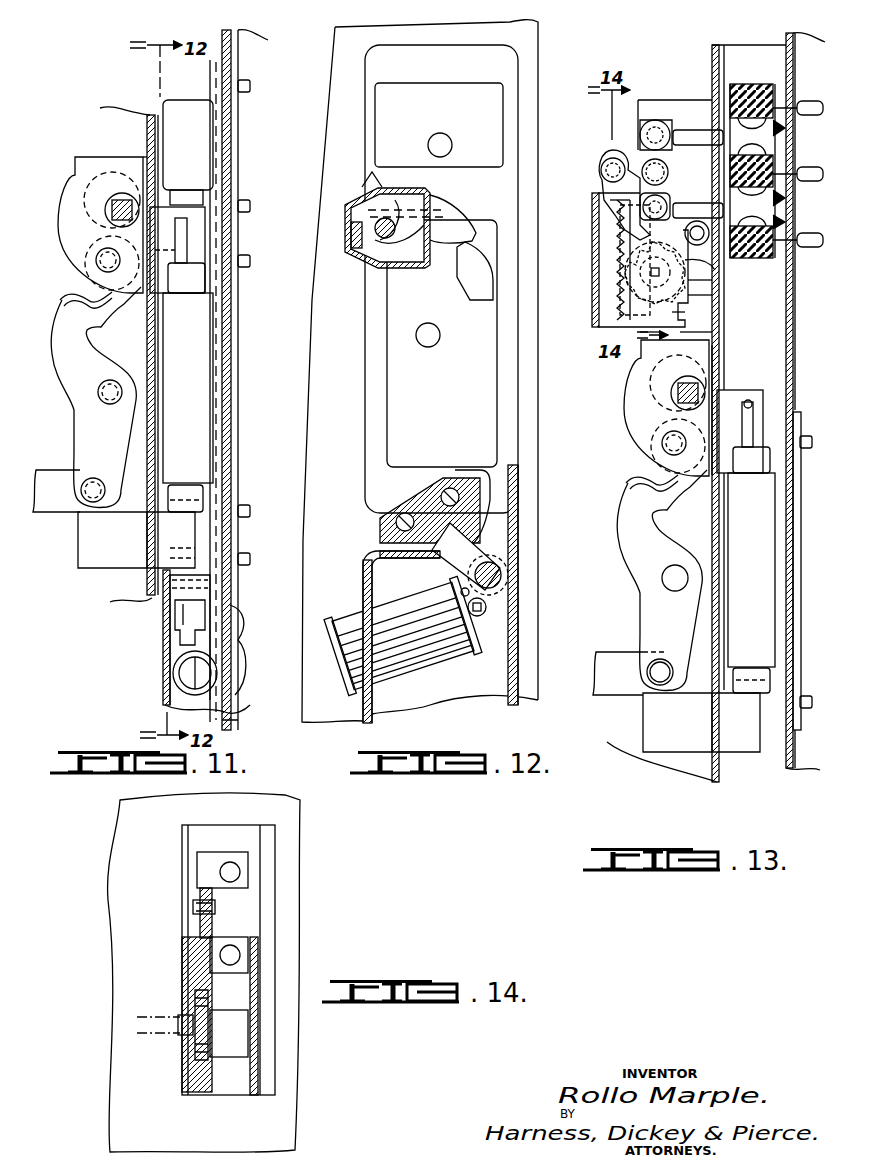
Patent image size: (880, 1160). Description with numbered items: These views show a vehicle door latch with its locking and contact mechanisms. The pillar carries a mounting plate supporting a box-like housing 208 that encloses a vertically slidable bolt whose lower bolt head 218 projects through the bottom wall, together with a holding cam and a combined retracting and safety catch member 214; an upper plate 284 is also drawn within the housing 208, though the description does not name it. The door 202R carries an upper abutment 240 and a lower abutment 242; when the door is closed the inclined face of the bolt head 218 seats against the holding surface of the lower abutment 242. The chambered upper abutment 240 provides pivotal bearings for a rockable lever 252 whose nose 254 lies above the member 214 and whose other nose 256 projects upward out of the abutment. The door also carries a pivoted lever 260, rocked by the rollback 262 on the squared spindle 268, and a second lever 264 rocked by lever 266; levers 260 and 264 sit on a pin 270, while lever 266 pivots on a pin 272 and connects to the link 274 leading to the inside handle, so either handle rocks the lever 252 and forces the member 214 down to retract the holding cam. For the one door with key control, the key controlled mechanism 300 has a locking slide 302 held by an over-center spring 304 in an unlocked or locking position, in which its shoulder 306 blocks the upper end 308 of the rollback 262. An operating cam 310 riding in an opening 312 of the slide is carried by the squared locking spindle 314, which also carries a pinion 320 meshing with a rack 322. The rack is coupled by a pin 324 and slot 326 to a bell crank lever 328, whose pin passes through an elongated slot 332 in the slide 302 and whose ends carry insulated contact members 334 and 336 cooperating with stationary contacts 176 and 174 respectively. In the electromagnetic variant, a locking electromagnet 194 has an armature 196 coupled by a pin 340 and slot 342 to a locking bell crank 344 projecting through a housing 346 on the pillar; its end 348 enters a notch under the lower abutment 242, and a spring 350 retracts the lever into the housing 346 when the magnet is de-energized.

In FIG. 13, the stationary contacts 174 is at (785, 225).
In FIG. 13, the stationary contacts 176 is at (780, 138).
In FIG. 11, the locking electromagnet 194 is at (190, 672).
In FIG. 12, the locking electromagnet 194 is at (425, 648).
In FIG. 12, the armature 196 is at (482, 602).
In FIG. 13, the door 202R is at (716, 46).
In FIG. 14, the door 202R is at (285, 858).
In FIG. 11, the housing 208 is at (188, 378).
In FIG. 12, the housing 208 is at (460, 383).
In FIG. 13, the housing 208 is at (778, 563).
In FIG. 12, the combined retracting and safety catch member 214 is at (475, 268).
In FIG. 11, the bolt head 218 is at (198, 497).
In FIG. 12, the bolt head 218 is at (462, 472).
In FIG. 13, the bolt head 218 is at (748, 678).
In FIG. 12, the upper abutment 240 is at (375, 260).
In FIG. 11, the lower abutment 242 is at (160, 528).
In FIG. 12, the lower abutment 242 is at (490, 500).
In FIG. 13, the lower abutment 242 is at (735, 735).
In FIG. 12, the rockable lever 252 is at (447, 206).
In FIG. 11, the nose 254 is at (181, 240).
In FIG. 13, the nose 254 is at (750, 404).
In FIG. 11, the nose 256 is at (205, 198).
In FIG. 12, the nose 256 is at (378, 192).
In FIG. 11, the pivoted lever 260 is at (66, 203).
In FIG. 13, the pivoted lever 260 is at (633, 416).
In FIG. 11, the rollback 262 is at (147, 152).
In FIG. 13, the rollback 262 is at (718, 358).
In FIG. 11, the second lever 264 is at (88, 306).
In FIG. 13, the second lever 264 is at (648, 488).
In FIG. 11, the lever 266 is at (88, 448).
In FIG. 13, the lever 266 is at (656, 618).
In FIG. 11, the squared spindle 268 is at (115, 203).
In FIG. 11, the pin 270 is at (100, 260).
In FIG. 11, the pin 272 is at (100, 396).
In FIG. 11, the link 274 is at (34, 512).
In FIG. 13, the link 274 is at (615, 690).
In FIG. 11, the slide plate 284 is at (197, 150).
In FIG. 12, the slide plate 284 is at (470, 120).
In FIG. 13, the key controlled mechanism 300 is at (596, 206).
In FIG. 14, the key controlled mechanism 300 is at (180, 940).
In FIG. 13, the locking slide 302 is at (692, 297).
In FIG. 13, the over-center spring 304 is at (705, 265).
In FIG. 13, the shoulder 306 is at (690, 315).
In FIG. 13, the upper end 308 is at (720, 340).
In FIG. 13, the operating cam 310 is at (636, 290).
In FIG. 13, the opening 312 is at (640, 335).
In FIG. 14, the opening 312 is at (212, 996).
In FIG. 13, the squared locking spindle 314 is at (690, 282).
In FIG. 13, the pinion 320 is at (626, 240).
In FIG. 13, the rack 322 is at (626, 262).
In FIG. 14, the rack 322 is at (215, 935).
In FIG. 13, the pin 324 is at (640, 146).
In FIG. 13, the slot 326 is at (611, 170).
In FIG. 13, the bell crank lever 328 is at (657, 120).
In FIG. 13, the elongated slot 332 is at (678, 171).
In FIG. 13, the contact member 334 is at (700, 125).
In FIG. 13, the contact member 336 is at (790, 208).
In FIG. 12, the pin 340 is at (478, 605).
In FIG. 12, the slot 342 is at (484, 618).
In FIG. 11, the locking bell crank 344 is at (197, 603).
In FIG. 12, the locking bell crank 344 is at (505, 533).
In FIG. 12, the housing 346 is at (395, 562).
In FIG. 12, the end 348 is at (440, 525).
In FIG. 12, the spring 350 is at (500, 547).
In FIG. 13, the spring 350 is at (693, 135).